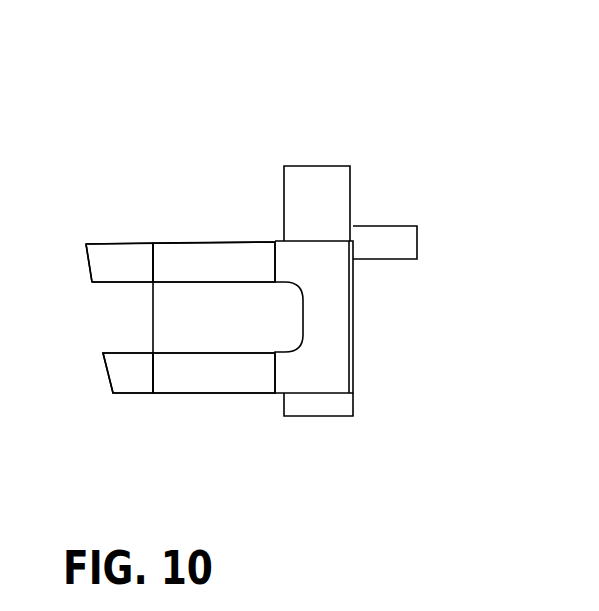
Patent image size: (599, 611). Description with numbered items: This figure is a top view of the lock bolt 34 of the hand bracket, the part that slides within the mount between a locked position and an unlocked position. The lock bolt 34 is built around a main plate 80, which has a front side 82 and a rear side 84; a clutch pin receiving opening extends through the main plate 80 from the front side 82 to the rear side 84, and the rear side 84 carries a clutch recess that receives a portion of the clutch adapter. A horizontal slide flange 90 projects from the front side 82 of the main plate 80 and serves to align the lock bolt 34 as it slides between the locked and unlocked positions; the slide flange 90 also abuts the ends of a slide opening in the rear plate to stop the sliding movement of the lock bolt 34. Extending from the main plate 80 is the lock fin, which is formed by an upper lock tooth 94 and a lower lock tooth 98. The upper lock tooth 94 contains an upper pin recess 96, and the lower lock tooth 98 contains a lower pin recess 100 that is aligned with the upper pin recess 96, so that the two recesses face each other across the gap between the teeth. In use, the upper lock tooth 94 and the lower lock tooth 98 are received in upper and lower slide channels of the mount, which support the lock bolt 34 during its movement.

The lock bolt 34 is at (134, 181).
The main plate 80 is at (350, 205).
The front side 82 is at (353, 286).
The rear side 84 is at (284, 197).
The horizontal slide flange 90 is at (417, 241).
The upper lock tooth 94 is at (84, 270).
The upper pin recess 96 is at (220, 260).
The lower lock tooth 98 is at (98, 370).
The lower pin recess 100 is at (224, 375).